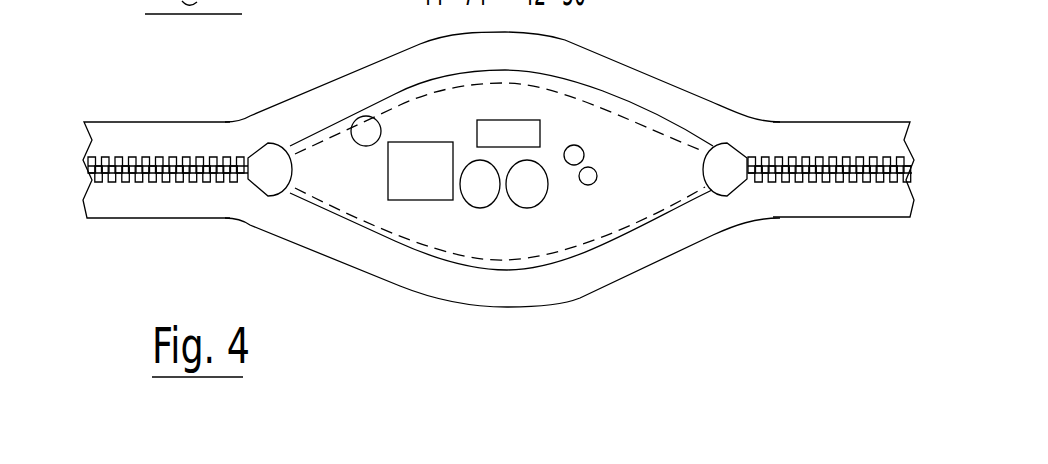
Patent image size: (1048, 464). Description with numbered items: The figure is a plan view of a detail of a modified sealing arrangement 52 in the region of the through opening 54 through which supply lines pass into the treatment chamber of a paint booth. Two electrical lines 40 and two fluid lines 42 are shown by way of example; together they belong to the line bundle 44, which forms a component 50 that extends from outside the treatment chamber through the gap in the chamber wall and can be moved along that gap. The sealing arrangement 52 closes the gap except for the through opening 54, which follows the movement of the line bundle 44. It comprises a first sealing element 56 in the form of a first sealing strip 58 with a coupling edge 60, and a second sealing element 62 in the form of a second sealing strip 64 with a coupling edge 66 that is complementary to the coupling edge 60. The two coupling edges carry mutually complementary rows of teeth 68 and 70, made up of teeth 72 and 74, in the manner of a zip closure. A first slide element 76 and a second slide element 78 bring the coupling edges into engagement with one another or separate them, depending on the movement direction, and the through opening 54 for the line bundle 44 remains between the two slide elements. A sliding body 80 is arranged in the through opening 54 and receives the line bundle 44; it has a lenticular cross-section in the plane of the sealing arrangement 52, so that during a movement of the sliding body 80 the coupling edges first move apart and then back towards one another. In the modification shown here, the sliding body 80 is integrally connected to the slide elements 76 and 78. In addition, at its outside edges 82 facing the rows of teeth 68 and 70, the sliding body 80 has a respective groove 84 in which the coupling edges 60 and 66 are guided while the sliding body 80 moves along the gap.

The electrical lines 40 is at (592, 157).
The fluid lines 42 is at (503, 213).
The line bundle 44 is at (473, 222).
The component 50 is at (453, 217).
The sealing arrangement 52 is at (728, 57).
The through opening 54 is at (378, 114).
The first sealing element 56 is at (872, 137).
The first sealing strip 58 is at (820, 142).
The coupling edge 60 is at (758, 156).
The second sealing element 62 is at (874, 190).
The second sealing strip 64 is at (826, 203).
The coupling edge 66 is at (780, 180).
The row of teeth 68 is at (913, 164).
The row of teeth 70 is at (914, 176).
The teeth 72 is at (132, 165).
The teeth 74 is at (172, 185).
The first slide element 76 is at (724, 176).
The second slide element 78 is at (273, 170).
The sliding body 80 is at (323, 167).
The outside edges 82 is at (408, 86).
The groove 84 is at (577, 96).